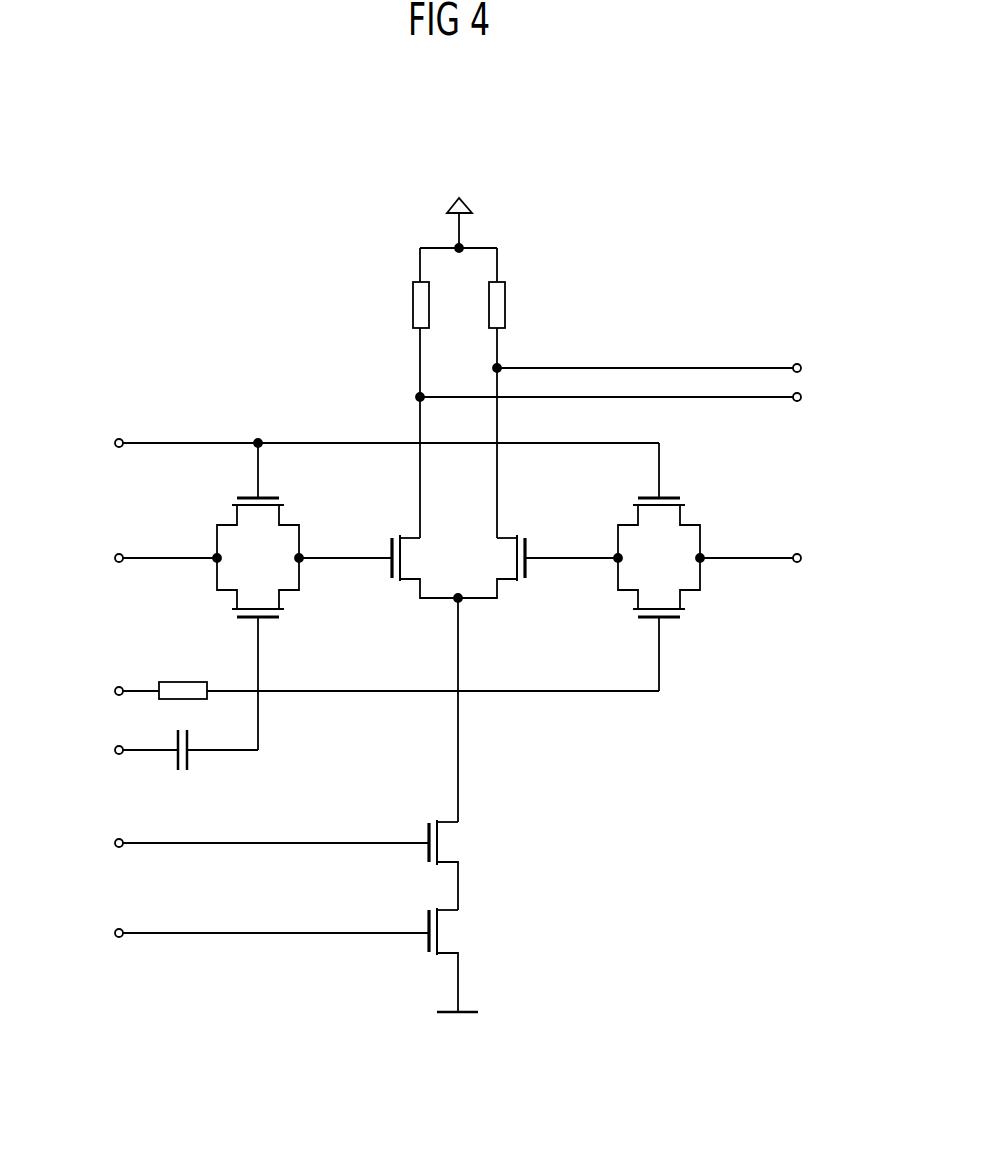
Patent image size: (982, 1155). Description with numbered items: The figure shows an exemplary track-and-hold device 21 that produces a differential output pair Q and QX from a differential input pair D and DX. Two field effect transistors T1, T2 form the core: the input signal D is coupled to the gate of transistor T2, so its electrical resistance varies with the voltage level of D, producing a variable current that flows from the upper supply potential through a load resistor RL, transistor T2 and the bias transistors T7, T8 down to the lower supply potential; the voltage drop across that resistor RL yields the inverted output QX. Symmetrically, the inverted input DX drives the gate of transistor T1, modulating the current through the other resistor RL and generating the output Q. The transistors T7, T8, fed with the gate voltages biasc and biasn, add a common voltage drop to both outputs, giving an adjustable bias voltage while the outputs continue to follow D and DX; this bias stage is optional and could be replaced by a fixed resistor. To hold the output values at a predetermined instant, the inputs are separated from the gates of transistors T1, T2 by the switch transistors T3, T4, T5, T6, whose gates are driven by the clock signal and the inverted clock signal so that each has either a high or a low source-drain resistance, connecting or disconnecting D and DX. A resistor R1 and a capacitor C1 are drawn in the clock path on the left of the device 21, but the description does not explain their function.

The track-and-hold device 21 is at (215, 158).
The field effect transistor T1 is at (503, 552).
The field effect transistor T2 is at (409, 552).
The transistor T3 is at (667, 519).
The transistor T4 is at (667, 597).
The transistor T5 is at (264, 597).
The transistor T6 is at (264, 519).
The field effect transistor T7 is at (303, 865).
The field effect transistor T8 is at (303, 960).
The resistor RL is at (458, 393).
The resistor R1 is at (391, 658).
The capacitor C1 is at (190, 711).